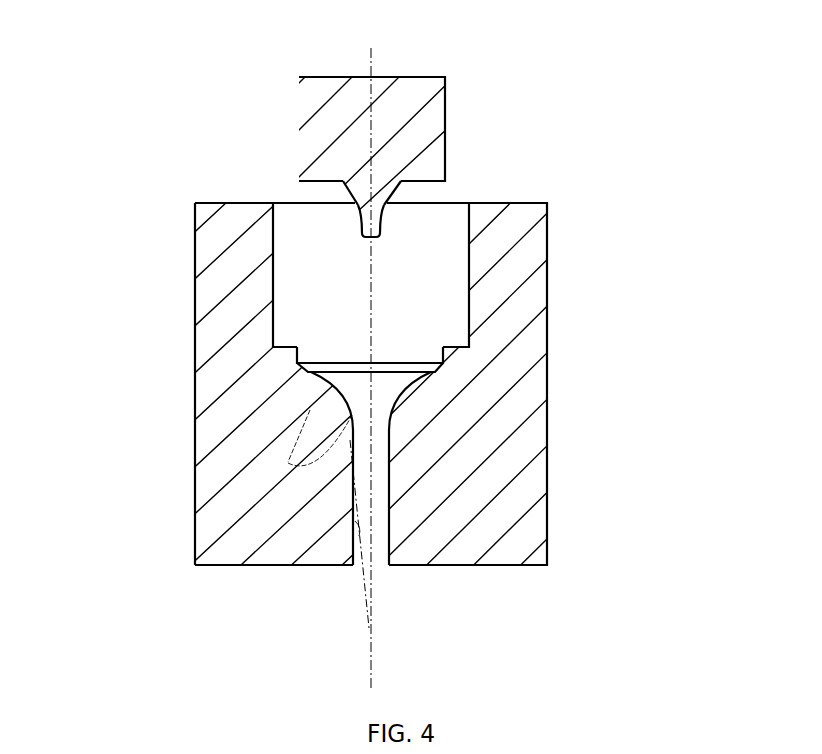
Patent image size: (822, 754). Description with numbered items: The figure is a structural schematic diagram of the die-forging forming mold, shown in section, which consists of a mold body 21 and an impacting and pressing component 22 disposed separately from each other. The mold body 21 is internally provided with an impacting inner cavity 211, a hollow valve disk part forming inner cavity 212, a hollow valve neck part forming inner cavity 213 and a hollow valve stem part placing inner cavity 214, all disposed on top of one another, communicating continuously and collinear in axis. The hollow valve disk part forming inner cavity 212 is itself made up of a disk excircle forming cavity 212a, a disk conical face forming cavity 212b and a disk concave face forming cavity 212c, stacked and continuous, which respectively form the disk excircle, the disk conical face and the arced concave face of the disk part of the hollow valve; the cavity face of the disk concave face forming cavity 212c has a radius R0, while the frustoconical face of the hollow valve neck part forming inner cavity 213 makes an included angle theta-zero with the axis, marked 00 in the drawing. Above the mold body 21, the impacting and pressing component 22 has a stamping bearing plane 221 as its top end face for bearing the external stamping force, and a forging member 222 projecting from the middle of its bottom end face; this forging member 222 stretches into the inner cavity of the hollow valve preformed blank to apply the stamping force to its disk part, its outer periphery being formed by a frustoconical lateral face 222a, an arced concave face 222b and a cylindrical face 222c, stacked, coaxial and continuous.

The mold body 21 is at (195, 462).
The impacting inner cavity 211 is at (452, 250).
The hollow valve disk part forming inner cavity 212 is at (547, 331).
The disk excircle forming cavity 212a is at (425, 355).
The disk conical face forming cavity 212b is at (395, 382).
The disk concave face forming cavity 212c is at (418, 382).
The hollow valve neck part forming inner cavity 213 is at (385, 415).
The hollow valve stem part placing inner cavity 214 is at (383, 508).
The impacting and pressing component 22 is at (304, 144).
The stamping bearing plane 221 is at (418, 76).
The forging member 222 is at (304, 192).
The frustoconical lateral face 222a is at (350, 195).
The arced concave face 222b is at (361, 216).
The cylindrical face 222c is at (361, 234).
The inclination angle 00 is at (362, 524).